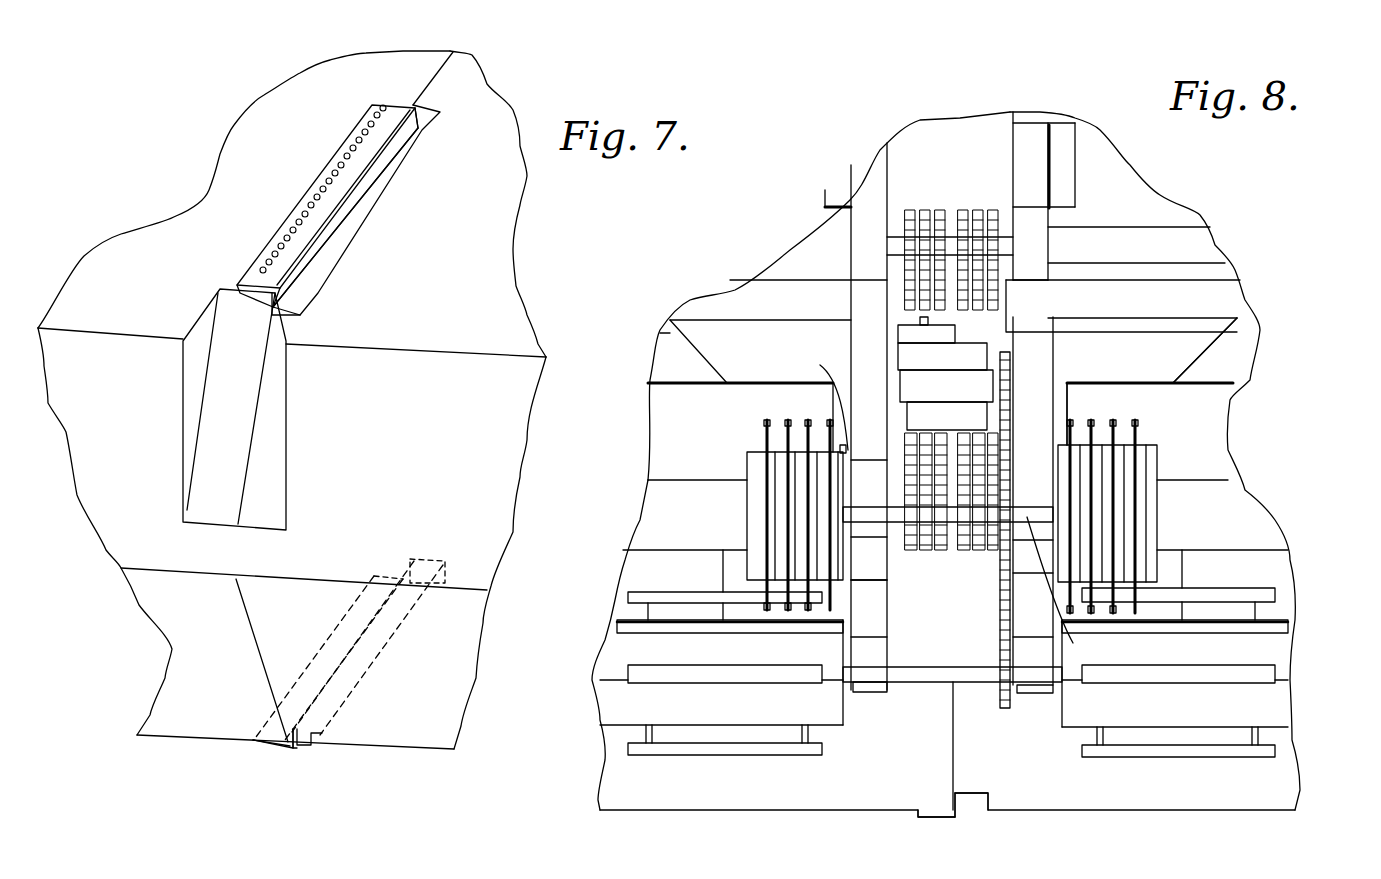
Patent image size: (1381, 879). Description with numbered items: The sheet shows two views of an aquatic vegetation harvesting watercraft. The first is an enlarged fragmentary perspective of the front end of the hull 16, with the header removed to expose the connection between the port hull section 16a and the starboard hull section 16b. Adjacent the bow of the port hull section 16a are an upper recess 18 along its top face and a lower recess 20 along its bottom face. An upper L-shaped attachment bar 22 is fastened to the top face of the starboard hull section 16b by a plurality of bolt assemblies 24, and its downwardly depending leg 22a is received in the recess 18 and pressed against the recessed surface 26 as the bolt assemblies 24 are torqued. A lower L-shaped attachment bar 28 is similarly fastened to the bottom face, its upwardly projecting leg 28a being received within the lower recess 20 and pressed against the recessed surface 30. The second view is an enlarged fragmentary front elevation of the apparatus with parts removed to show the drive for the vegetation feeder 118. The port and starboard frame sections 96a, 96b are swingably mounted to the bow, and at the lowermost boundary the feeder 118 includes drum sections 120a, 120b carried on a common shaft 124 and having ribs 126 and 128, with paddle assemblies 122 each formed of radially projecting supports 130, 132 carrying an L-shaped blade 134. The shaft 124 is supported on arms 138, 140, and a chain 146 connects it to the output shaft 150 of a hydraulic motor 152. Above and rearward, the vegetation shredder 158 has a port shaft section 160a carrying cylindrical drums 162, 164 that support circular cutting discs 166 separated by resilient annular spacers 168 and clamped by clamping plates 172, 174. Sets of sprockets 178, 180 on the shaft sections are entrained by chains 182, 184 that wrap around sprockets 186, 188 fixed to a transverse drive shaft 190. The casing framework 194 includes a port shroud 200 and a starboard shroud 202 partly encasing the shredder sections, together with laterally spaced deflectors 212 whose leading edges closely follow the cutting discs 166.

In FIG. 7, the hull 16 is at (382, 50).
In FIG. 7, the port hull section 16a is at (490, 248).
In FIG. 8, the port hull section 16a is at (1232, 805).
In FIG. 7, the starboard hull section 16b is at (198, 210).
In FIG. 8, the starboard hull section 16b is at (625, 795).
In FIG. 7, the upper recess 18 is at (322, 256).
In FIG. 7, the lower recess 20 is at (316, 748).
In FIG. 8, the lower recess 20 is at (980, 800).
In FIG. 7, the upper L-shaped attachment bar 22 is at (406, 102).
In FIG. 7, the downwardly depending leg 22a is at (382, 163).
In FIG. 7, the bolt assemblies 24 is at (340, 135).
In FIG. 8, the bolt assemblies 24 is at (912, 310).
In FIG. 7, the recessed surface 26 is at (372, 197).
In FIG. 7, the lower L-shaped attachment bar 28 is at (255, 745).
In FIG. 8, the lower L-shaped attachment bar 28 is at (920, 818).
In FIG. 7, the upwardly projecting leg 28a is at (300, 750).
In FIG. 8, the upwardly projecting leg 28a is at (960, 805).
In FIG. 7, the recessed surface 30 is at (426, 555).
In FIG. 8, the port frame section 96a is at (1245, 292).
In FIG. 8, the starboard frame section 96b is at (730, 290).
In FIG. 8, the vegetation feeder 118 is at (770, 758).
In FIG. 8, the port drum section 120a is at (1280, 660).
In FIG. 8, the starboard drum section 120b is at (610, 742).
In FIG. 8, the paddle assemblies 122 is at (696, 595).
In FIG. 8, the common shaft 124 is at (928, 672).
In FIG. 8, the ribs 126 is at (1305, 675).
In FIG. 8, the ribs 128 is at (832, 682).
In FIG. 8, the radially projecting support 130 is at (1252, 735).
In FIG. 8, the radially projecting support 132 is at (1090, 735).
In FIG. 8, the L-shaped blade 134 is at (1182, 758).
In FIG. 8, the arm 138 is at (1030, 690).
In FIG. 8, the arm 140 is at (856, 690).
In FIG. 8, the chain 146 is at (1000, 615).
In FIG. 8, the output shaft 150 is at (1005, 380).
In FIG. 8, the hydraulic motor 152 is at (920, 355).
In FIG. 8, the vegetation shredder 158 is at (1112, 425).
In FIG. 8, the port shaft section 160a is at (820, 365).
In FIG. 8, the cylindrical drum 162 is at (1243, 500).
In FIG. 8, the cylindrical drum 164 is at (725, 485).
In FIG. 8, the circular cutting discs 166 is at (765, 440).
In FIG. 8, the annular spacers 168 is at (762, 540).
In FIG. 8, the clamping plate 172 is at (1058, 400).
In FIG. 8, the clamping plate 174 is at (842, 445).
In FIG. 8, the sprockets 178 is at (960, 552).
In FIG. 8, the sprockets 180 is at (898, 553).
In FIG. 8, the chain 182 is at (975, 455).
In FIG. 8, the chain 184 is at (925, 415).
In FIG. 8, the sprockets 186 is at (1000, 215).
In FIG. 8, the sprockets 188 is at (910, 210).
In FIG. 8, the transverse drive shaft 190 is at (1006, 242).
In FIG. 8, the casing framework 194 is at (1233, 400).
In FIG. 8, the port shroud 200 is at (1232, 383).
In FIG. 8, the starboard shroud 202 is at (800, 380).
In FIG. 8, the deflectors 212 is at (718, 620).